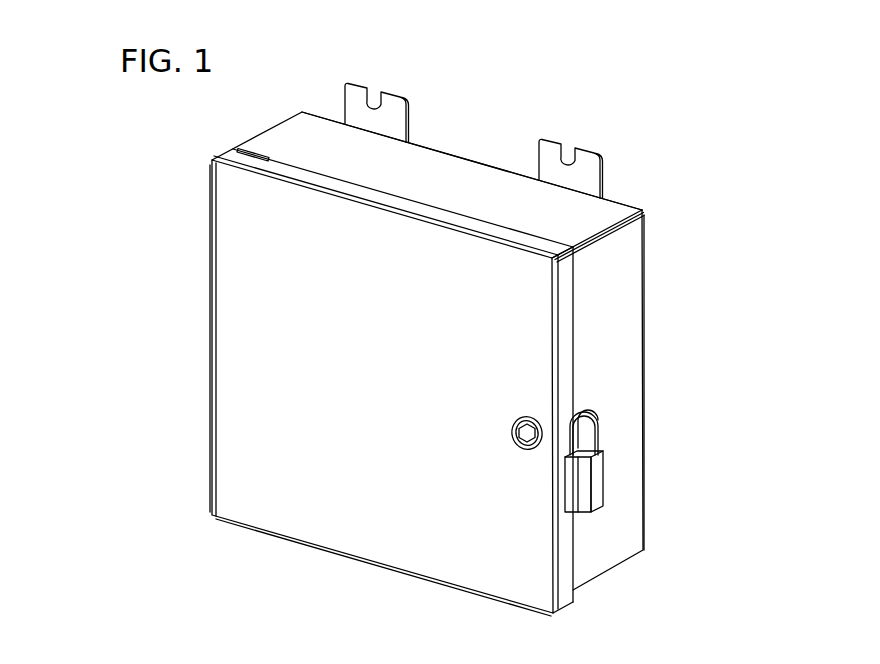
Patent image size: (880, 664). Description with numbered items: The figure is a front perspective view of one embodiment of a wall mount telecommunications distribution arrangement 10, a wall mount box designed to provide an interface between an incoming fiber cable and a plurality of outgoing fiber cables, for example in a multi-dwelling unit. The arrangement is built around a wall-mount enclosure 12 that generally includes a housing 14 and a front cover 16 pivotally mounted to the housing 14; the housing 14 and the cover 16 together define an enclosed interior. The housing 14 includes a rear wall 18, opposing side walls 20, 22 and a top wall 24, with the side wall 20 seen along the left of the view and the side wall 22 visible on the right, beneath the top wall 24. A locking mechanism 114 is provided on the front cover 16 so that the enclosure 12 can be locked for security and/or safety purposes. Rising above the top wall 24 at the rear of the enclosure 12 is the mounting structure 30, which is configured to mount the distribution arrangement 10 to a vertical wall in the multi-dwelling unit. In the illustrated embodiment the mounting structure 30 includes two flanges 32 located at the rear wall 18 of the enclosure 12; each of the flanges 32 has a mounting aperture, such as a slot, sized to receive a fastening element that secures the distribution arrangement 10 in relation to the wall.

The wall mount telecommunications distribution arrangement 10 is at (606, 93).
The wall-mount enclosure 12 is at (142, 484).
The housing 14 is at (296, 128).
The front cover 16 is at (247, 335).
The rear wall 18 is at (442, 150).
The side wall 20 is at (267, 130).
The side wall 22 is at (622, 350).
The top wall 24 is at (597, 215).
The mounting structure 30 is at (553, 114).
The flanges 32 is at (357, 88).
The locking mechanism 114 is at (508, 457).